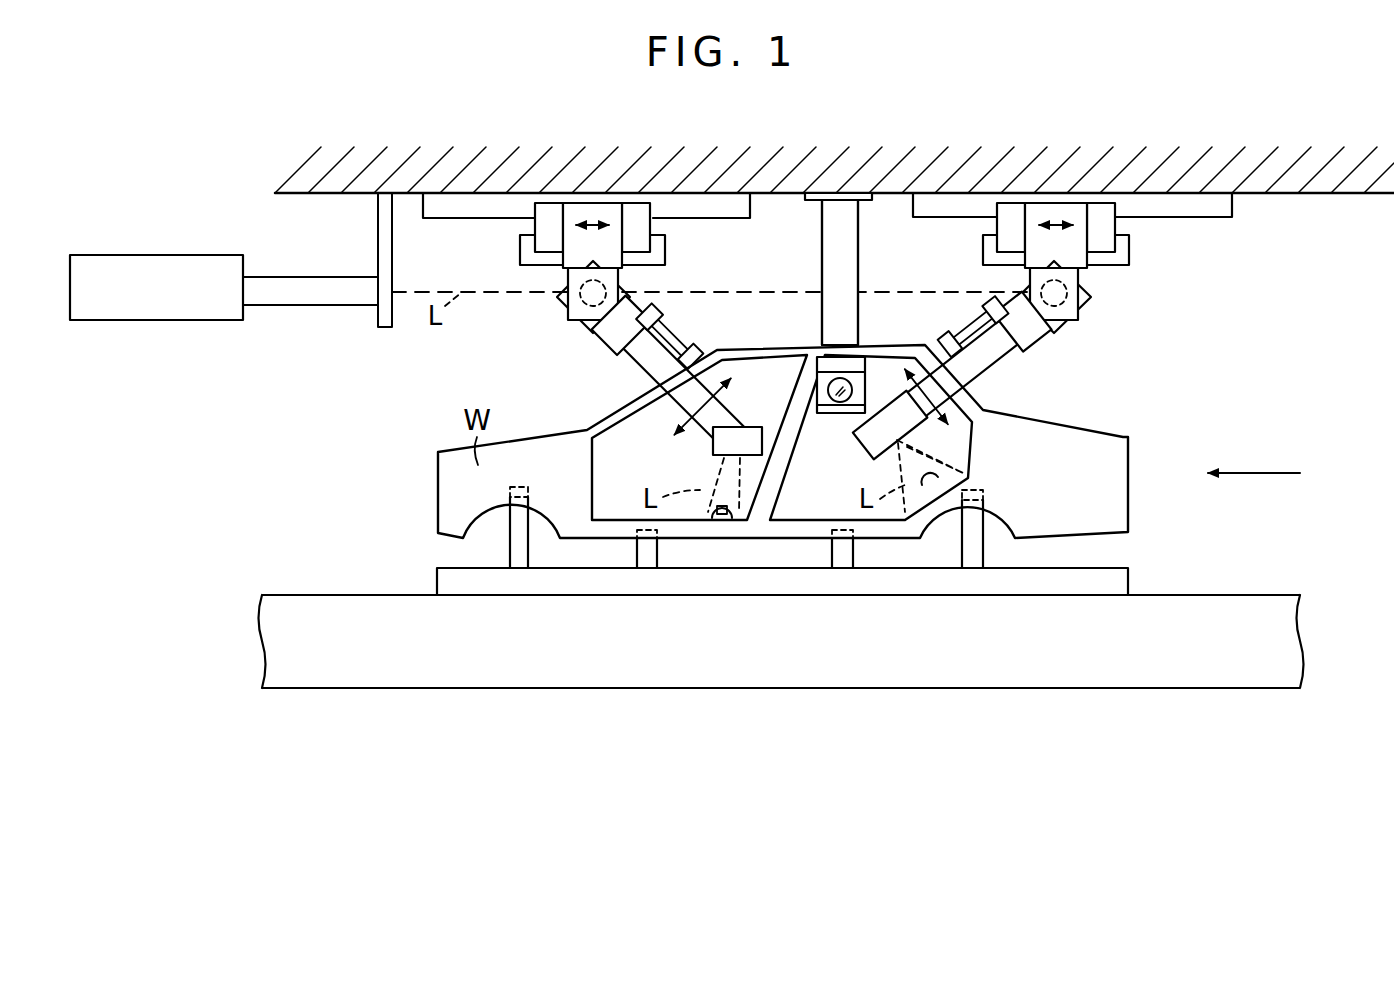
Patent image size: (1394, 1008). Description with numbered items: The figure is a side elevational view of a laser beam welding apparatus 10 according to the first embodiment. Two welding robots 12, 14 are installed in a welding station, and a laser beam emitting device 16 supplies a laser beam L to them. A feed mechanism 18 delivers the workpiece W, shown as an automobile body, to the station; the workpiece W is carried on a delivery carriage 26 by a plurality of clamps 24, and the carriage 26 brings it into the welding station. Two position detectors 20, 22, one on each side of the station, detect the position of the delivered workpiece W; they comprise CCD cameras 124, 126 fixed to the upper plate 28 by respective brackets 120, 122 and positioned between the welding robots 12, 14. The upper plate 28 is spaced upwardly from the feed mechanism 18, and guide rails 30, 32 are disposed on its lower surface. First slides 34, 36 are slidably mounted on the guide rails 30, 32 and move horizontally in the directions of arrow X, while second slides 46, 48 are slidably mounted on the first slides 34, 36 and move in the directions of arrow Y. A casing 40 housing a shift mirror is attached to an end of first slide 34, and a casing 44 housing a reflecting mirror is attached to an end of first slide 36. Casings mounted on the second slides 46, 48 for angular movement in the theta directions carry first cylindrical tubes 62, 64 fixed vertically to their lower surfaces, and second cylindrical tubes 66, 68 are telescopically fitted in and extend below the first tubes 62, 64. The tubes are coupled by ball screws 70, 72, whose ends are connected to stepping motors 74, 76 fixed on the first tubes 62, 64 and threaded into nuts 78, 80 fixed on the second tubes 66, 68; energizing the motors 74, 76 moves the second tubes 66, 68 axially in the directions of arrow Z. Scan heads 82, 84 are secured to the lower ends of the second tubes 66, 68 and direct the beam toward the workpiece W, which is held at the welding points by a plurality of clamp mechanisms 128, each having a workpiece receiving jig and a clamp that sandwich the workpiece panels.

The laser beam welding apparatus 10 is at (1195, 128).
The welding robot 12 is at (652, 309).
The welding robot 14 is at (996, 316).
The laser beam emitting device 16 is at (150, 262).
The feed mechanism 18 is at (793, 660).
The position detector 20 is at (868, 260).
The position detector 22 is at (903, 272).
The clamps 24 is at (520, 556).
The delivery carriage 26 is at (481, 586).
The upper plate 28 is at (1302, 197).
The guide rail 30 is at (503, 200).
The guide rail 32 is at (963, 205).
The first slide 34 is at (640, 212).
The first slide 36 is at (1105, 210).
The casing 40 is at (568, 303).
The casing 44 is at (1110, 305).
The second slide 46 is at (667, 251).
The second slide 48 is at (1130, 252).
The first cylindrical tube 62 is at (607, 333).
The first cylindrical tube 64 is at (1056, 337).
The second cylindrical tube 66 is at (670, 360).
The second cylindrical tube 68 is at (969, 359).
The ball screw 70 is at (666, 326).
The ball screw 72 is at (972, 327).
The stepping motor 74 is at (651, 310).
The stepping motor 76 is at (985, 295).
The nut 78 is at (700, 340).
The nut 80 is at (942, 334).
The scan head 82 is at (713, 446).
The scan head 84 is at (920, 428).
The bracket 120 is at (834, 248).
The bracket 122 is at (798, 275).
The CCD camera 124 is at (838, 415).
The CCD camera 126 is at (822, 439).
The clamp mechanism 128 is at (948, 485).